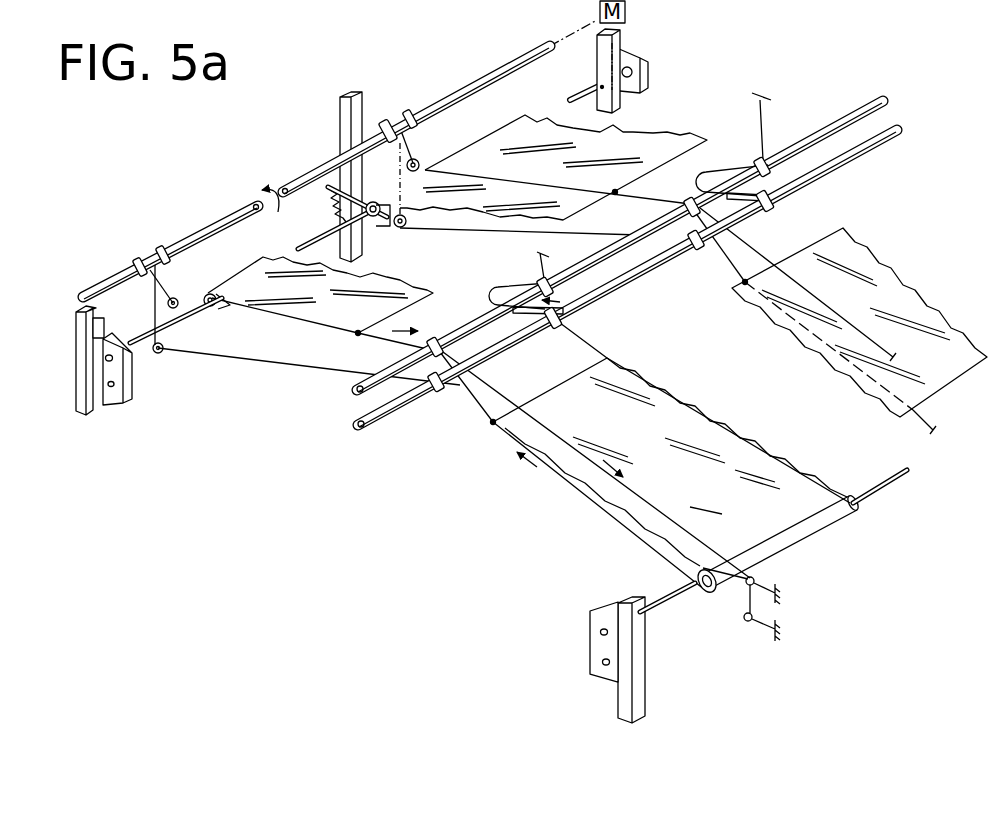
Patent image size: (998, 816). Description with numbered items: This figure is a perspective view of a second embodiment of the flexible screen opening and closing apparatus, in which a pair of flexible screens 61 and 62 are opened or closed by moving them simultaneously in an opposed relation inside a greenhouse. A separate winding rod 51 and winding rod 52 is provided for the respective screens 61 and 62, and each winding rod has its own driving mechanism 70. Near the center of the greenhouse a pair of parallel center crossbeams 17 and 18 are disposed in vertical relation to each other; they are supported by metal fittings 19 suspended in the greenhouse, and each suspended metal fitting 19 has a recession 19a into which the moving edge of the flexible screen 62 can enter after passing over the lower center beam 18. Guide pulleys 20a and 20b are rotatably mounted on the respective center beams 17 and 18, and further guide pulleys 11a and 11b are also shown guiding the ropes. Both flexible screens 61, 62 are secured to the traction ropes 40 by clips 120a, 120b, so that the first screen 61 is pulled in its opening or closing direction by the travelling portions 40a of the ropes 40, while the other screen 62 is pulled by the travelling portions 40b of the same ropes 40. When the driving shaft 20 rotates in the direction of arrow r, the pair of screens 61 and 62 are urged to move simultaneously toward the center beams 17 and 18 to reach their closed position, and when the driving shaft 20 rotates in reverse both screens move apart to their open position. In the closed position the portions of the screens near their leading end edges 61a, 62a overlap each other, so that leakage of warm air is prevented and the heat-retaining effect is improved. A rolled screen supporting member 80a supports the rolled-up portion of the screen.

The guide pulley 11a is at (745, 620).
The guide pulley 11b is at (746, 572).
The center crossbeam 17 is at (353, 378).
The lower center beam 18 is at (376, 423).
The suspended metal fitting 19 is at (505, 283).
The recession 19a is at (642, 329).
The driving shaft 20 is at (478, 86).
The guide pulley 20a is at (436, 340).
The guide pulley 20b is at (437, 388).
The traction rope 40 is at (152, 327).
The travelling portion 40a is at (247, 318).
The travelling portion 40b is at (280, 368).
The winding rod 51 is at (180, 328).
The winding rod 52 is at (868, 503).
The flexible screen 61 is at (647, 140).
The leading end edge 61a is at (600, 200).
The flexible screen 62 is at (731, 440).
The leading end edge 62a is at (790, 258).
The driving mechanism 70 is at (142, 396).
The rolled screen supporting member 80a is at (385, 230).
The clip 120a is at (358, 336).
The clip 120b is at (491, 428).